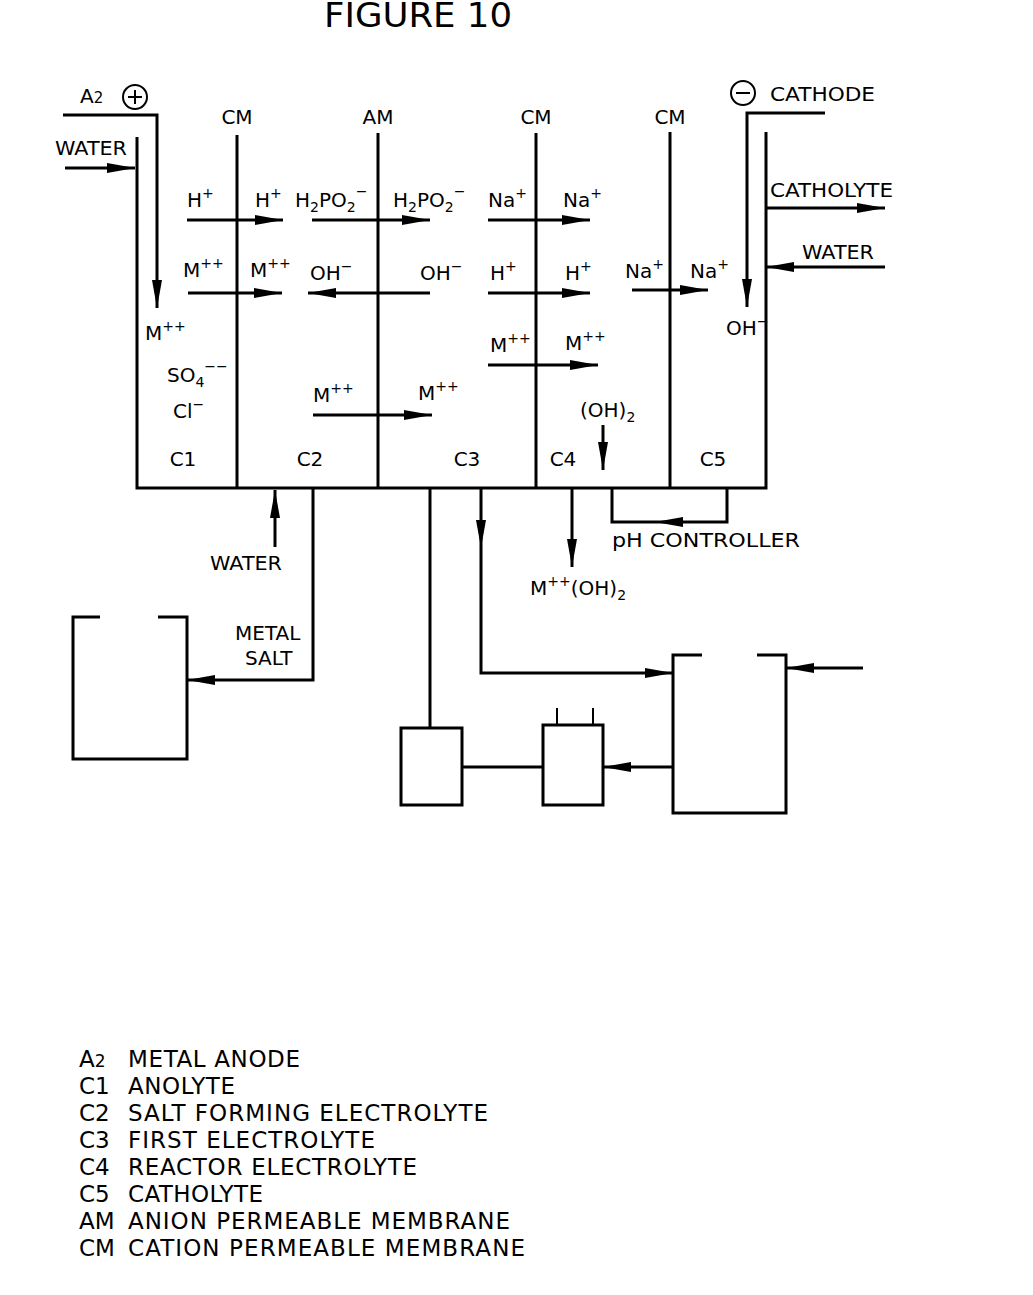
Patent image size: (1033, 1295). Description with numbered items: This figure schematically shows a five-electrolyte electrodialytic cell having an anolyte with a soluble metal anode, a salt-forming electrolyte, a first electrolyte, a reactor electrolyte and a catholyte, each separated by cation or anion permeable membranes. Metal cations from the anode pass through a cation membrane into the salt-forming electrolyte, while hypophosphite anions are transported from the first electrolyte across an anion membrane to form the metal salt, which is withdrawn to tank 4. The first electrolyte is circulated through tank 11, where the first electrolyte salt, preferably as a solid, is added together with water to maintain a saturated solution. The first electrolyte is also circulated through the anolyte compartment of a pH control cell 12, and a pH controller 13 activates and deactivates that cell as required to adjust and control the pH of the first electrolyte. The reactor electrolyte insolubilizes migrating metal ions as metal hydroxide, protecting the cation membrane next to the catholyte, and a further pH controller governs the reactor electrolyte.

The metal salt tank 4 is at (129, 703).
The tank 11 is at (757, 727).
The pH control cell 12 is at (601, 759).
The pH controller 13 is at (450, 673).